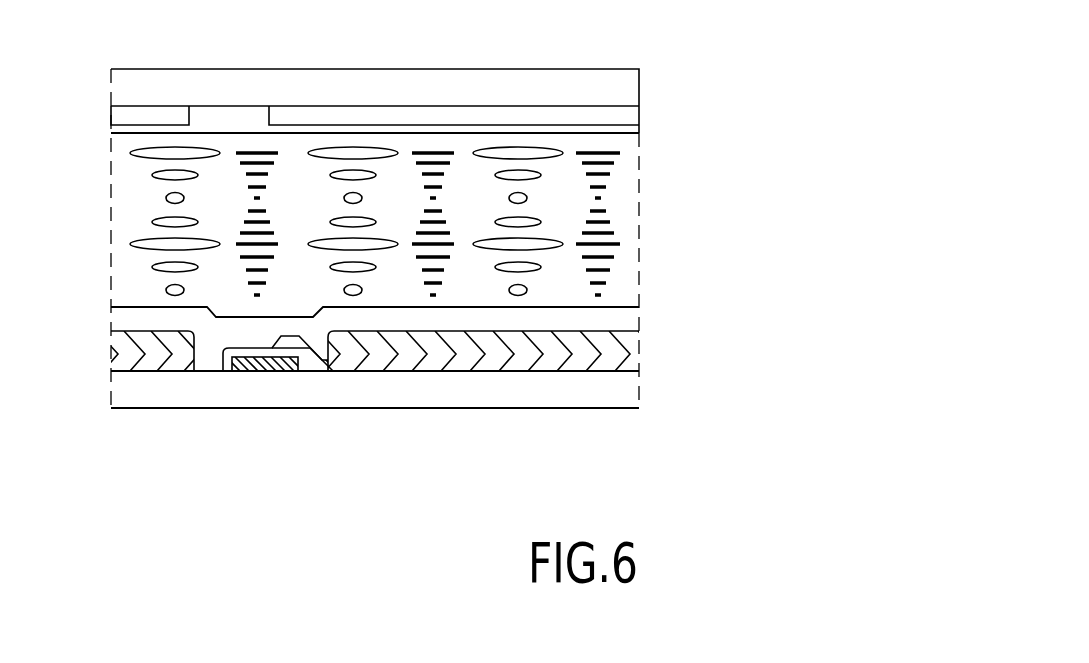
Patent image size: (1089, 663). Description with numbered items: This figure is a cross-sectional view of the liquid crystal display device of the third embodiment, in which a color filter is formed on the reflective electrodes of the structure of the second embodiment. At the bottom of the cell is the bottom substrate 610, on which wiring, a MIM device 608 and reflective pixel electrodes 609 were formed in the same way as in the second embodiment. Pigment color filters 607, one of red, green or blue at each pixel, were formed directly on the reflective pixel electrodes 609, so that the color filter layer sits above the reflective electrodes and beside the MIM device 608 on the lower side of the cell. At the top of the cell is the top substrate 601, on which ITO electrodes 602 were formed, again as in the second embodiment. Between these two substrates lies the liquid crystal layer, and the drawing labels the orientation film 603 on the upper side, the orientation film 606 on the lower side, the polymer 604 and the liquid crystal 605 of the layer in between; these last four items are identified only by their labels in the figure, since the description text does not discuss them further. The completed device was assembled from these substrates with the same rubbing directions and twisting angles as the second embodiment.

The top substrate 601 is at (630, 88).
The ITO electrodes 602 is at (630, 112).
The orientation film 603 is at (630, 130).
The polymer 604 is at (533, 178).
The liquid crystal 605 is at (603, 237).
The orientation film 606 is at (626, 307).
The pigment color filters 607 is at (630, 340).
The MIM device 608 is at (288, 352).
The reflective pixel electrodes 609 is at (630, 360).
The bottom substrate 610 is at (626, 388).